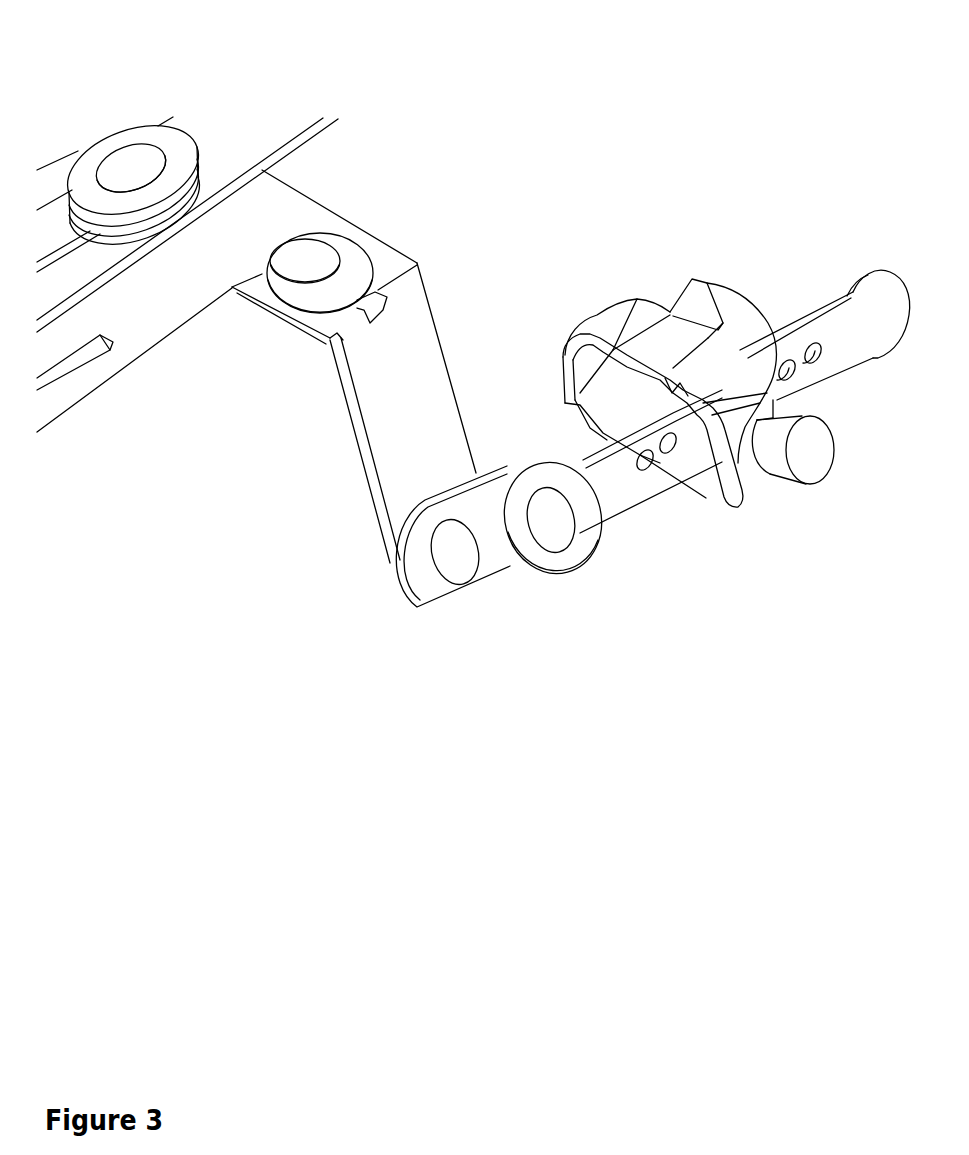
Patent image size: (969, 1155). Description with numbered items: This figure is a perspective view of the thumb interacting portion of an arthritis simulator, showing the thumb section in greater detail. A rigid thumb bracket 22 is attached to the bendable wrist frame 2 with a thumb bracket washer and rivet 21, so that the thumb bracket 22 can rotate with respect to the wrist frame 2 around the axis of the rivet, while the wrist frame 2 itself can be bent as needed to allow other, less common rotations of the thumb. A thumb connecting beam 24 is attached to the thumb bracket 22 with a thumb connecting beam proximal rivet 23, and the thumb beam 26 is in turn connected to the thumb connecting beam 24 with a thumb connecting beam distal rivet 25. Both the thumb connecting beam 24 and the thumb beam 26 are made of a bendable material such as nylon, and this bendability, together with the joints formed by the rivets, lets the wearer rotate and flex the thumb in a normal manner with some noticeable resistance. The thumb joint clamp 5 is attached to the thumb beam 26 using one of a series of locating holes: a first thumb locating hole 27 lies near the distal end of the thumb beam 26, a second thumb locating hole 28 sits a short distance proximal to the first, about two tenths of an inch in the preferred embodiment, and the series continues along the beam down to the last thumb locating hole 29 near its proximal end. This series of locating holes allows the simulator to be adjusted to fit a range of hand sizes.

The bendable wrist frame 2 is at (187, 223).
The thumb joint clamp 5 is at (698, 329).
The thumb bracket washer and rivet 21 is at (345, 195).
The thumb bracket 22 is at (378, 362).
The thumb connecting beam proximal rivet 23 is at (368, 552).
The thumb connecting beam 24 is at (453, 601).
The thumb connecting beam distal rivet 25 is at (553, 557).
The thumb beam 26 is at (651, 529).
The first thumb locating hole 27 is at (825, 288).
The second thumb locating hole 28 is at (840, 414).
The last thumb locating hole 29 is at (686, 522).